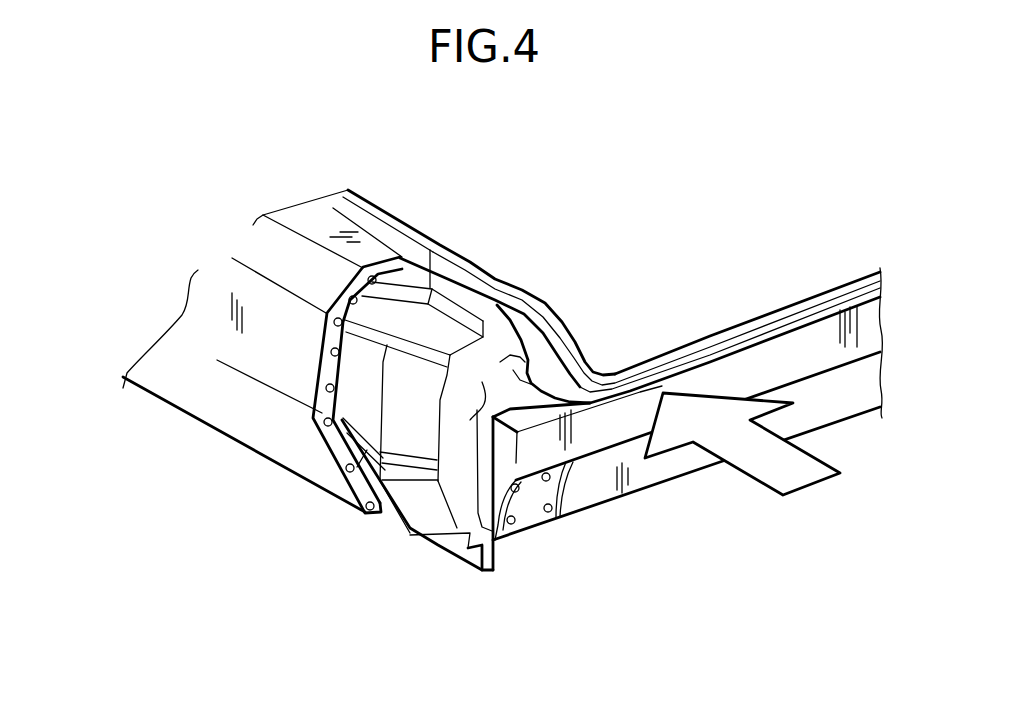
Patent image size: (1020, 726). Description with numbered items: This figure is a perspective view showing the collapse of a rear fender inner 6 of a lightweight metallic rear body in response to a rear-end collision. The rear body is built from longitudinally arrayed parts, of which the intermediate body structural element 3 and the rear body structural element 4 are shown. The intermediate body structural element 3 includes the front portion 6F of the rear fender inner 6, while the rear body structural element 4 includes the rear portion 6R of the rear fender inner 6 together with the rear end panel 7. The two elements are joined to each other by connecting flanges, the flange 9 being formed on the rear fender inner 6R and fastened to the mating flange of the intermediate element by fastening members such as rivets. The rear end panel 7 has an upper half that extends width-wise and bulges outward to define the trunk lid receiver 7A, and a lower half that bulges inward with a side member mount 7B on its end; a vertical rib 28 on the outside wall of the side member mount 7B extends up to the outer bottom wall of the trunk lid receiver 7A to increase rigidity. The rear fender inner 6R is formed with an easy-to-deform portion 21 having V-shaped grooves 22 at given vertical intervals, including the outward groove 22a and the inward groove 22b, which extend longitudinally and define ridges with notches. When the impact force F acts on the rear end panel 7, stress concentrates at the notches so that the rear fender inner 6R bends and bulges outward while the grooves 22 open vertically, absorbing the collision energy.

The intermediate body structural element 3 is at (366, 172).
The rear body structural element 4 is at (786, 290).
The rear fender inner 6 is at (308, 454).
The front portion of rear fender inner 6F is at (241, 373).
The rear portion of rear fender inner 6R is at (435, 518).
The rear end panel 7 is at (686, 424).
The trunk lid receiver 7A is at (705, 376).
The side member mount 7B is at (548, 527).
The flange 9 is at (323, 353).
The easy-to-deform portion 21 is at (380, 538).
The V-shaped groove 22 is at (400, 423).
The outward V-shaped groove 22a is at (388, 333).
The inward V-shaped groove 22b is at (447, 302).
The vertical rib 28 is at (513, 524).
The impact force F is at (747, 458).